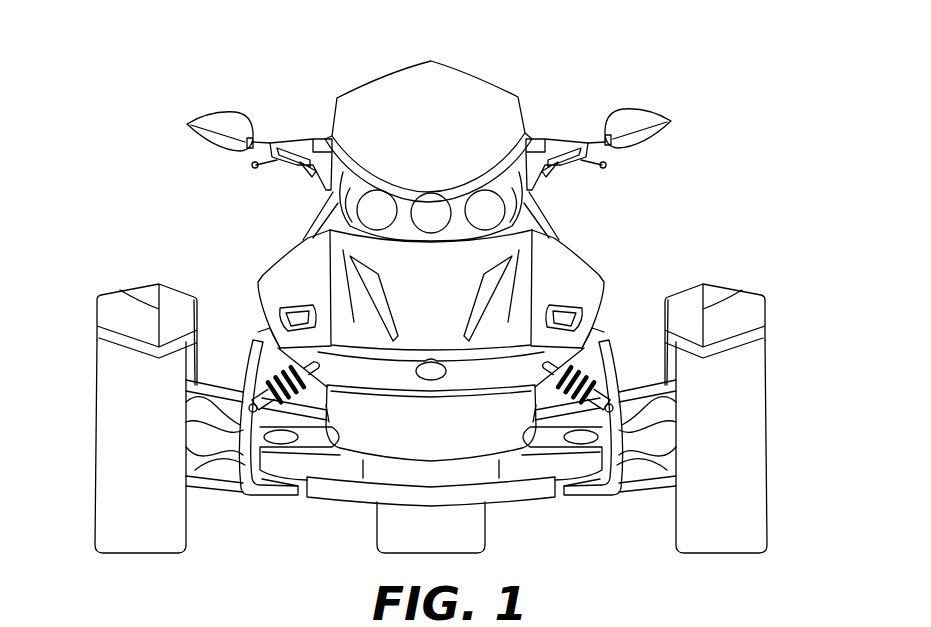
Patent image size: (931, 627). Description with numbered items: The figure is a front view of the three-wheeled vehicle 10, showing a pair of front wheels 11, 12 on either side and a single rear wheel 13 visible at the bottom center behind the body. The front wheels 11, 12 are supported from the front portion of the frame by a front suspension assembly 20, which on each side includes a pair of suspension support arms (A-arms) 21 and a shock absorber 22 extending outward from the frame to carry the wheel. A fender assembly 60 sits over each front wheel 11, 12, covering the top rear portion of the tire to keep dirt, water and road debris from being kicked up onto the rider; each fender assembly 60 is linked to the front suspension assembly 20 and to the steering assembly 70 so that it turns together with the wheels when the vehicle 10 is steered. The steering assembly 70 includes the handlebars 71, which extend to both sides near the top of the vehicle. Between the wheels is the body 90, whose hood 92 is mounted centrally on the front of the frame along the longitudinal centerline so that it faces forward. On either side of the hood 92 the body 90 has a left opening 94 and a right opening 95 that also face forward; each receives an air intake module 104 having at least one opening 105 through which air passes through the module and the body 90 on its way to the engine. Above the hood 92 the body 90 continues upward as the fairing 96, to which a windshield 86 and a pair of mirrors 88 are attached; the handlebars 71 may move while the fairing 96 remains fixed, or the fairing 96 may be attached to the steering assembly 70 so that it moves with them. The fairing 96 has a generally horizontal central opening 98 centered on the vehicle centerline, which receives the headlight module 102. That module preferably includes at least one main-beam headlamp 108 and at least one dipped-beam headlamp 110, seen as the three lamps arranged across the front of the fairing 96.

The vehicle 10 is at (180, 43).
The front wheel 11 is at (768, 452).
The front wheel 12 is at (96, 450).
The rear wheel 13 is at (377, 522).
The front suspension assembly 20 is at (218, 376).
The suspension support arms (A-arms) 21 is at (186, 439).
The shock absorber 22 is at (282, 385).
The fender assembly 60 is at (135, 282).
The steering assembly 70 is at (321, 116).
The handlebars 71 is at (298, 138).
The windshield 86 is at (405, 78).
The mirrors 88 is at (220, 114).
The body 90 is at (600, 237).
The hood 92 is at (446, 283).
The left opening 94 is at (586, 338).
The right opening 95 is at (266, 328).
The fairing 96 is at (517, 176).
The central opening 98 is at (520, 200).
The headlight module 102 is at (330, 195).
The air intake module 104 is at (276, 258).
The opening 105 is at (282, 322).
The main-beam headlamp 108 is at (432, 206).
The dipped-beam headlamp 110 is at (375, 212).